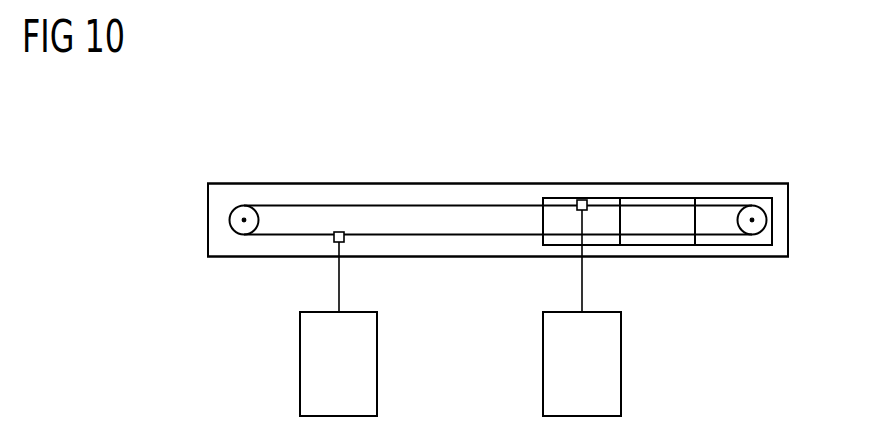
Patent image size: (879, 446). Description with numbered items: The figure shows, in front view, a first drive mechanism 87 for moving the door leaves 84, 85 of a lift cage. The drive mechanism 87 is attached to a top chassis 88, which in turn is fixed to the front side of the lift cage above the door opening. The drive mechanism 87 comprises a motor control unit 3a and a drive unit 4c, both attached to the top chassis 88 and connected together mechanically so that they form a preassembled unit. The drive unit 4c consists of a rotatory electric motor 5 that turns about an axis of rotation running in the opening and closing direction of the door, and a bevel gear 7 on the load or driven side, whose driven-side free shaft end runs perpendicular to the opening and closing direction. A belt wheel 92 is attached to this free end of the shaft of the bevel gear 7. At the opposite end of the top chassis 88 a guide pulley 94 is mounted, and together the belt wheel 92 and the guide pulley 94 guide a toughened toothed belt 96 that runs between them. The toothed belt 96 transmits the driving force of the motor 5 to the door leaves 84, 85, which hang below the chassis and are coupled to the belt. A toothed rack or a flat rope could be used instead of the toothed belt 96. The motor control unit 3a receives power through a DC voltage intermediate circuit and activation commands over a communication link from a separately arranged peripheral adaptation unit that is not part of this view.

The drive mechanism 87 is at (298, 160).
The top chassis 88 is at (382, 183).
The toothed belt 96 is at (471, 205).
The guide pulley 94 is at (241, 235).
The belt wheel 92 is at (763, 235).
The drive unit 4c is at (680, 124).
The motor control unit 3a is at (564, 198).
The rotatory electric motor 5 is at (654, 198).
The bevel gear 7 is at (722, 198).
The door leaf 85 is at (300, 365).
The door leaf 84 is at (621, 365).